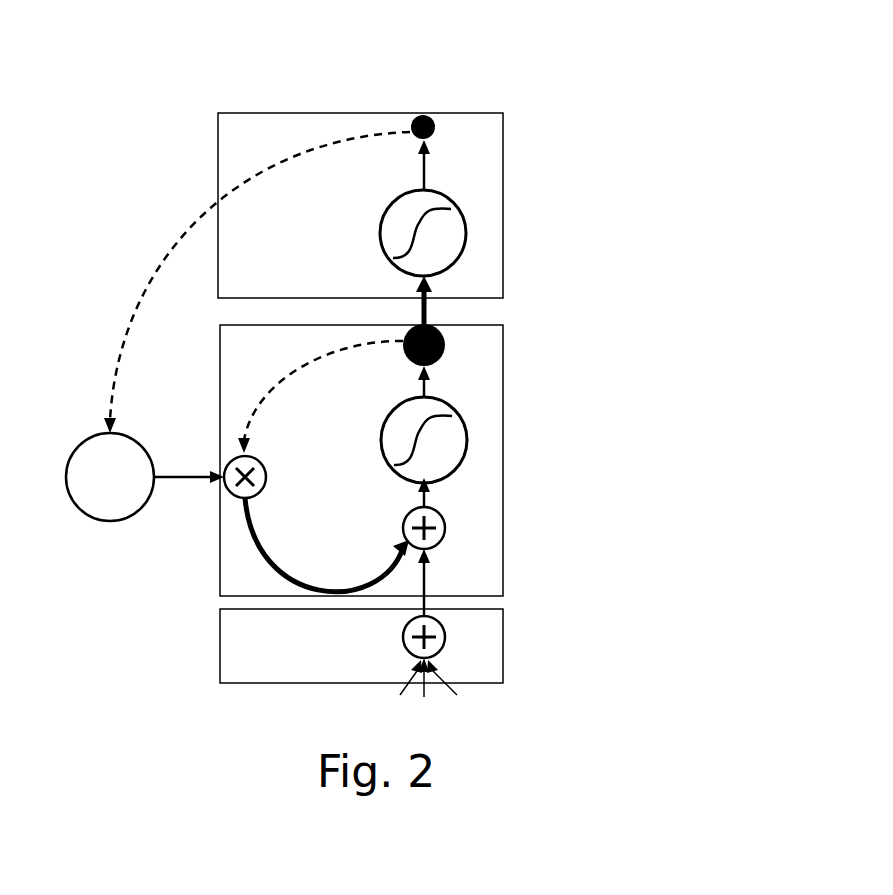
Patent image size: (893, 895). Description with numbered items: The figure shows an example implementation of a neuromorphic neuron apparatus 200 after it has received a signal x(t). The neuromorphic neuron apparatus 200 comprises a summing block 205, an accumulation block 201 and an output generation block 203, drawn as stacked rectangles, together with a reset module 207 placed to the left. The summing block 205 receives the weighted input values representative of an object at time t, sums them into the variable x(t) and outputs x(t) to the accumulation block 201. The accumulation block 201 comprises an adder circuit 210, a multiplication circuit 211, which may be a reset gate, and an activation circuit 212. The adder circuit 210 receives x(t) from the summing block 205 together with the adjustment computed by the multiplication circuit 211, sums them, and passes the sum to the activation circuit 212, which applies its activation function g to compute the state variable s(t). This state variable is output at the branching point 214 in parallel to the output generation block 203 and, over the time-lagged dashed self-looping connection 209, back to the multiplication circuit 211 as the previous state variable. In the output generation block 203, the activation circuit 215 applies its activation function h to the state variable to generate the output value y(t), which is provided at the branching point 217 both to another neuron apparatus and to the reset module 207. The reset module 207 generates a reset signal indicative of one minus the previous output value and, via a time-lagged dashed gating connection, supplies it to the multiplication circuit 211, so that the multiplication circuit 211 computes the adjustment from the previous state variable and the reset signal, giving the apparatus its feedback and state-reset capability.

The neuromorphic neuron apparatus 200 is at (594, 52).
The accumulation block 201 is at (503, 472).
The output generation block 203 is at (503, 211).
The summing block 205 is at (503, 647).
The reset module 207 is at (95, 515).
The connection 209 is at (257, 405).
The adder circuit 210 is at (445, 530).
The multiplication circuit 211 is at (227, 493).
The activation circuit 212 is at (468, 422).
The branching point 214 is at (446, 338).
The activation circuit 215 is at (455, 260).
The branching point 217 is at (435, 127).